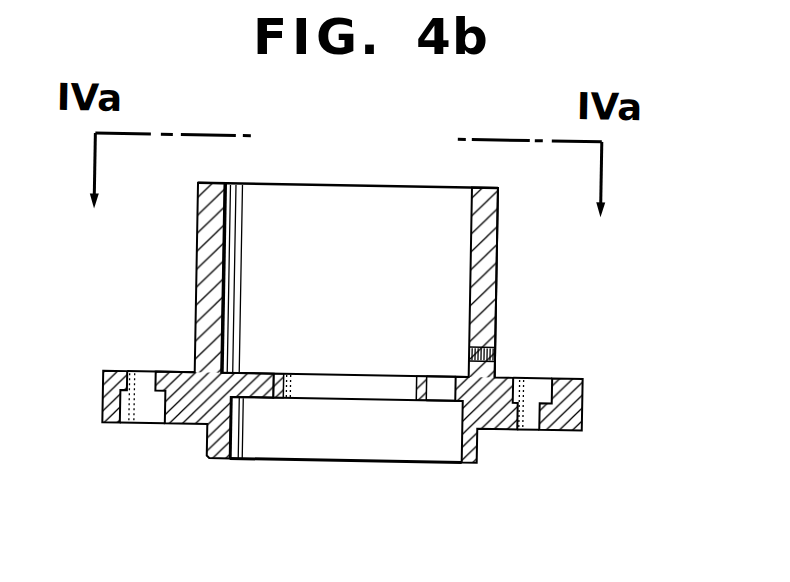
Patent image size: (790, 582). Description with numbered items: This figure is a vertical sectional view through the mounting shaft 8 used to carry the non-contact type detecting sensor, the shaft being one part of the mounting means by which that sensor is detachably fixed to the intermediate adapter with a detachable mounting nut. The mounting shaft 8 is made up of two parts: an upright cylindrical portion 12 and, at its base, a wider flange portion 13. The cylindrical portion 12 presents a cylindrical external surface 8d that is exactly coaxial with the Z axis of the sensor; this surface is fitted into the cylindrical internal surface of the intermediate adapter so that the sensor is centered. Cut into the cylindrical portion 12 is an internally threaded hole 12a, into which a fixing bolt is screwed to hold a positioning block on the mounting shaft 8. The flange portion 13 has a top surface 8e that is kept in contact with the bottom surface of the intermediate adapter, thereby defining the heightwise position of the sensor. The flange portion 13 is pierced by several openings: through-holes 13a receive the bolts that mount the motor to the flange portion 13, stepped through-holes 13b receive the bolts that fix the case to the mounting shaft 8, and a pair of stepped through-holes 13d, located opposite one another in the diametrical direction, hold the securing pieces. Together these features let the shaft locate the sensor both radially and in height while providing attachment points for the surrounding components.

The mounting shaft 8 is at (363, 176).
The cylindrical external surface 8d is at (499, 238).
The top surface 8e is at (177, 370).
The cylindrical portion 12 is at (205, 270).
The internally threaded hole 12a is at (494, 352).
The flange portion 13 is at (582, 420).
The through-holes 13a is at (433, 396).
The stepped through-holes 13b is at (526, 424).
The stepped through-holes 13d is at (130, 412).